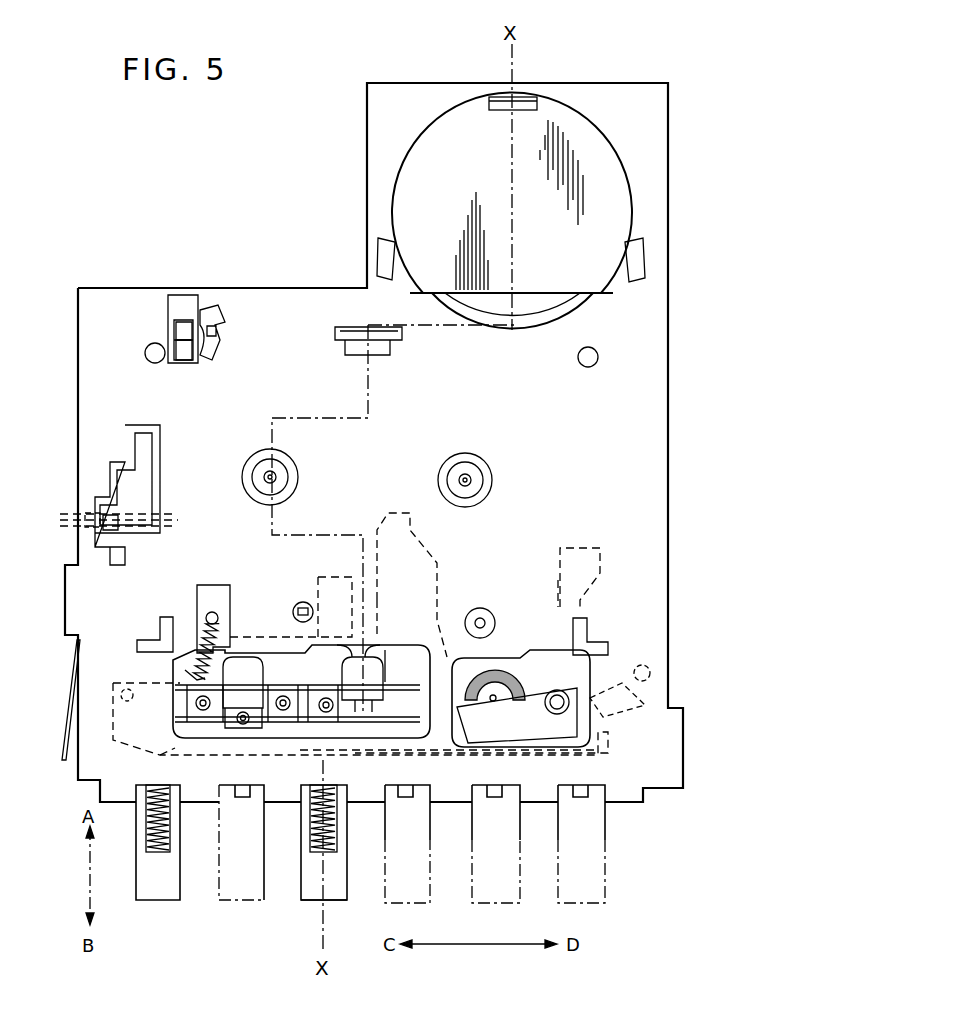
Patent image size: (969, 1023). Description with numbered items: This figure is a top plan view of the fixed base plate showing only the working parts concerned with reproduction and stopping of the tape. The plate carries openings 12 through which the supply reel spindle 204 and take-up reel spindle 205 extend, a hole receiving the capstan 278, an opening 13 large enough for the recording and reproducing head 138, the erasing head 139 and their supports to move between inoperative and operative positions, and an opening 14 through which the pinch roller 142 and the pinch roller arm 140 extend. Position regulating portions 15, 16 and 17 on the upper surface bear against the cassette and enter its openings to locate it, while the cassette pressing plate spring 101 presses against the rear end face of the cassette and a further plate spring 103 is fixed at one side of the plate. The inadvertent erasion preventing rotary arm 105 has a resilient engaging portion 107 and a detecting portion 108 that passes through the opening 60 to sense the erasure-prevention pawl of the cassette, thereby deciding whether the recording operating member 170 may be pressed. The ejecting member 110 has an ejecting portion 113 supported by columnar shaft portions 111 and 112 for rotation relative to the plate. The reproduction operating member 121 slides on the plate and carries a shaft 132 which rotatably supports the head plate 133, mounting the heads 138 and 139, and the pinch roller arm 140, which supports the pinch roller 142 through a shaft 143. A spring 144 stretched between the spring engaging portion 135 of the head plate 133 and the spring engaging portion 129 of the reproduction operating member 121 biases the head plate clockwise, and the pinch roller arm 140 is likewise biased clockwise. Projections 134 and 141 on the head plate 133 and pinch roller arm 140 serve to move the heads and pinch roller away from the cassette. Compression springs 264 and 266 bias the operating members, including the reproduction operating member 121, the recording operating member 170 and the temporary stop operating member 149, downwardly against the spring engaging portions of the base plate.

The opening 60 is at (183, 296).
The inadvertent erasion preventing rotary arm 105 is at (178, 332).
The resilient engaging portion 107 is at (214, 335).
The detecting portion 108 is at (189, 363).
The position regulating portions 15 is at (150, 362).
The cassette pressing plate spring 101 is at (385, 360).
The ejecting portion 113 is at (148, 452).
The columnar shaft portion 112 is at (85, 520).
The columnar shaft portion 111 is at (178, 520).
The ejecting member 110 is at (140, 530).
The openings 12 is at (282, 465).
The supply reel spindle 204 is at (286, 478).
The take-up reel spindle 205 is at (472, 480).
The capstan 278 is at (488, 622).
The opening 13 is at (293, 652).
The position regulating portions 16 is at (160, 623).
The spring 144 is at (195, 640).
The spring engaging portion 129 is at (213, 615).
The spring engaging portion 135 is at (185, 680).
The erasing head 139 is at (242, 657).
The position regulating portion 17 is at (296, 606).
The recording and reproducing head 138 is at (348, 656).
The opening 14 is at (548, 656).
The pinch roller 142 is at (505, 672).
The shaft 143 is at (493, 702).
The shaft 132 is at (548, 706).
The pinch roller arm 140 is at (480, 740).
The projection 141 is at (630, 678).
The projection 134 is at (125, 702).
The head plate 133 is at (160, 750).
The plate spring 103 is at (62, 737).
The compression spring 266 is at (165, 815).
The compression spring 264 is at (332, 816).
The recording operating member 170 is at (232, 898).
The reproduction operating member 121 is at (336, 896).
The temporary stop operating member 149 is at (600, 880).